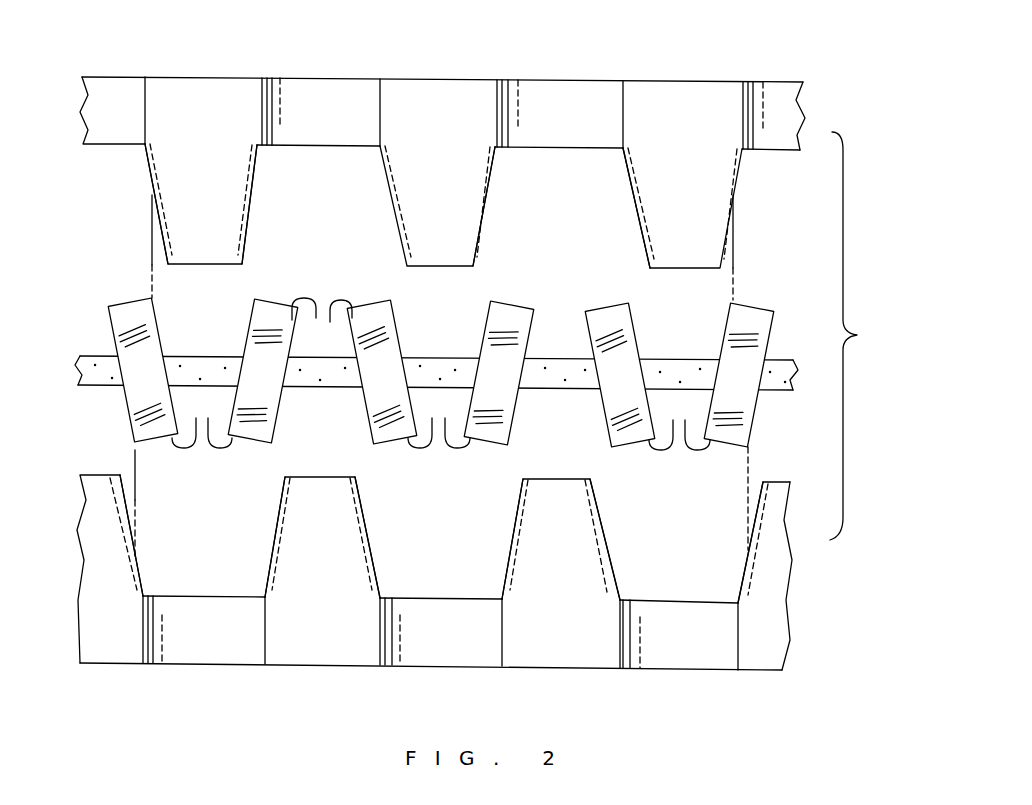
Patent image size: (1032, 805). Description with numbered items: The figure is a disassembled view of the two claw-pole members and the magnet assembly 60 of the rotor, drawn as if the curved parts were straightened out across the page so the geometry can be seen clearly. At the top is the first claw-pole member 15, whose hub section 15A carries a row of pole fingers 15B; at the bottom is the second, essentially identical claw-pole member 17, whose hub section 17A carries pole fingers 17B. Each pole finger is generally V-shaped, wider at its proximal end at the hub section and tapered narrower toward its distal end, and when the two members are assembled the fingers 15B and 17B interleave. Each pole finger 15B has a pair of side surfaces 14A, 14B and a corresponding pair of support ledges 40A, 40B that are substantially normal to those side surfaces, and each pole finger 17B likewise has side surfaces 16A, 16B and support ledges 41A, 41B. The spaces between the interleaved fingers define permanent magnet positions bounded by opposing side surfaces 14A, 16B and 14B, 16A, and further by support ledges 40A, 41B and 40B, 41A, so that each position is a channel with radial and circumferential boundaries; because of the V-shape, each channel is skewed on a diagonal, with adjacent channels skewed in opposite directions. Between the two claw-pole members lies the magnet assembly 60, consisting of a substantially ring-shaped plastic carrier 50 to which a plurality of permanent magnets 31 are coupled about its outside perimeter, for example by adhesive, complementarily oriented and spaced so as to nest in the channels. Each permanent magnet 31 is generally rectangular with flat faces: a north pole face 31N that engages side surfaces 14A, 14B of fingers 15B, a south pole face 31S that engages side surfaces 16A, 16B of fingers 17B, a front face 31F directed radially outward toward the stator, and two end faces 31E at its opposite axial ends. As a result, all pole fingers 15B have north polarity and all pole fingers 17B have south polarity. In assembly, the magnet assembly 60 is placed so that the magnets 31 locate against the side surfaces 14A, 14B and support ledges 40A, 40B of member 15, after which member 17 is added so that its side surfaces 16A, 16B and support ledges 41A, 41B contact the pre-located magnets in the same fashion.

The claw-pole member 15 is at (557, 76).
The hub section 15A is at (355, 77).
The pole fingers 15B is at (200, 177).
The side surface 14A is at (148, 205).
The side surface 14B is at (262, 170).
The support ledge 40A is at (165, 246).
The support ledge 40B is at (250, 200).
The permanent magnet 31 is at (362, 292).
The north pole face 31N is at (243, 342).
The end face 31E is at (441, 388).
The front face 31F is at (142, 372).
The south pole face 31S is at (132, 430).
The carrier 50 is at (98, 383).
The magnet assembly 60 is at (862, 328).
The claw-pole member 17 is at (236, 680).
The hub section 17A is at (693, 670).
The pole fingers 17B is at (105, 565).
The side surface 16A is at (283, 528).
The side surface 16B is at (130, 565).
The support ledge 41A is at (285, 490).
The support ledge 41B is at (132, 538).